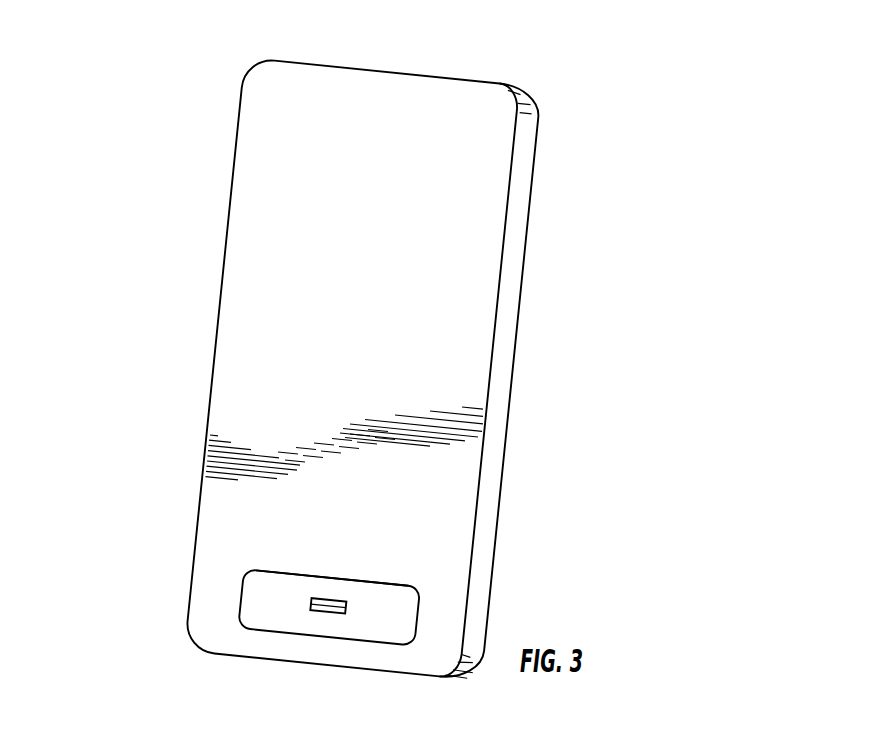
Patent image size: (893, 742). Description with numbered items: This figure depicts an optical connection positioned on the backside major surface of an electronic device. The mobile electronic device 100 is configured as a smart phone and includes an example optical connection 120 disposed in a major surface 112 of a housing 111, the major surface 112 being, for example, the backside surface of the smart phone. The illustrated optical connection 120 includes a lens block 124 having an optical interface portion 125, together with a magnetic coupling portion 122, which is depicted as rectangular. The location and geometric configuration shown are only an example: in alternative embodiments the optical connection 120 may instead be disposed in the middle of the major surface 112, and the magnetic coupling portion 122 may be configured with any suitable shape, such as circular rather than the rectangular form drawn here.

The mobile electronic device 100 is at (163, 132).
The housing 111 is at (498, 83).
The major surface 112 is at (237, 388).
The optical connection 120 is at (394, 559).
The magnetic coupling portion 122 is at (271, 565).
The lens block 124 is at (356, 608).
The optical interface portion 125 is at (327, 609).